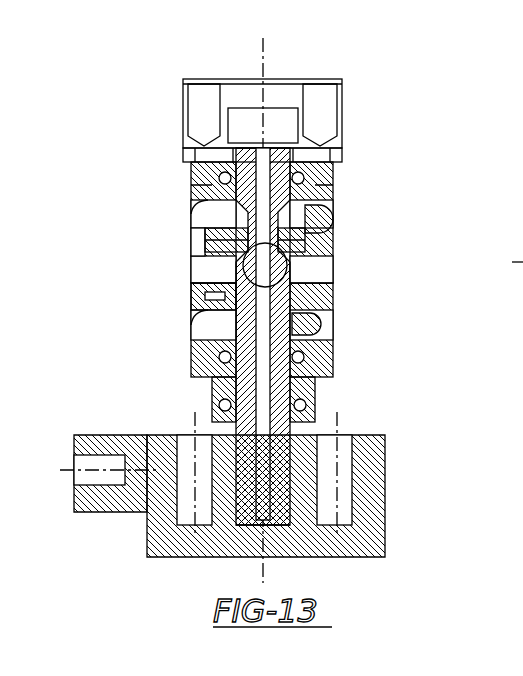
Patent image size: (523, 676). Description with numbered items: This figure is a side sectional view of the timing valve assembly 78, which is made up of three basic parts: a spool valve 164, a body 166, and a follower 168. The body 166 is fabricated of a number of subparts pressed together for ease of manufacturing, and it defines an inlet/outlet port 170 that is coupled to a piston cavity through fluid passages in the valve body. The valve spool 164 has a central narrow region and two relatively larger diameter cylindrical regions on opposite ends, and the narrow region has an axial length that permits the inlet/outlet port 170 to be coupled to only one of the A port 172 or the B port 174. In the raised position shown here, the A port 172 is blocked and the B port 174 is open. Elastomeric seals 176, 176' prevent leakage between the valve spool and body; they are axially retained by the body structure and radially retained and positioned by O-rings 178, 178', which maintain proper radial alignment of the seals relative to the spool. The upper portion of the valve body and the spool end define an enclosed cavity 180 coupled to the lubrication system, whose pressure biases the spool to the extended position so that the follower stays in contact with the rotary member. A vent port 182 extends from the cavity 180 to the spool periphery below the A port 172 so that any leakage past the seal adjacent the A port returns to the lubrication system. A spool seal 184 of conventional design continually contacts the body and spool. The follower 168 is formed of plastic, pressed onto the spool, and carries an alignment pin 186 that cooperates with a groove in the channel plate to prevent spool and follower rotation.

The timing valve assembly 78 is at (296, 300).
The spool valve 164 is at (317, 375).
The body 166 is at (333, 328).
The follower 168 is at (386, 532).
The inlet/outlet port 170 is at (288, 268).
The A port 172 is at (212, 325).
The B port 174 is at (203, 205).
The elastomeric seal 176 is at (315, 221).
The elastomeric seal 176' is at (380, 330).
The O-ring 178 is at (193, 257).
The O-ring 178' is at (165, 306).
The enclosed cavity 180 is at (260, 118).
The vent port 182 is at (330, 160).
The spool seal 184 is at (317, 401).
The alignment pin 186 is at (68, 500).